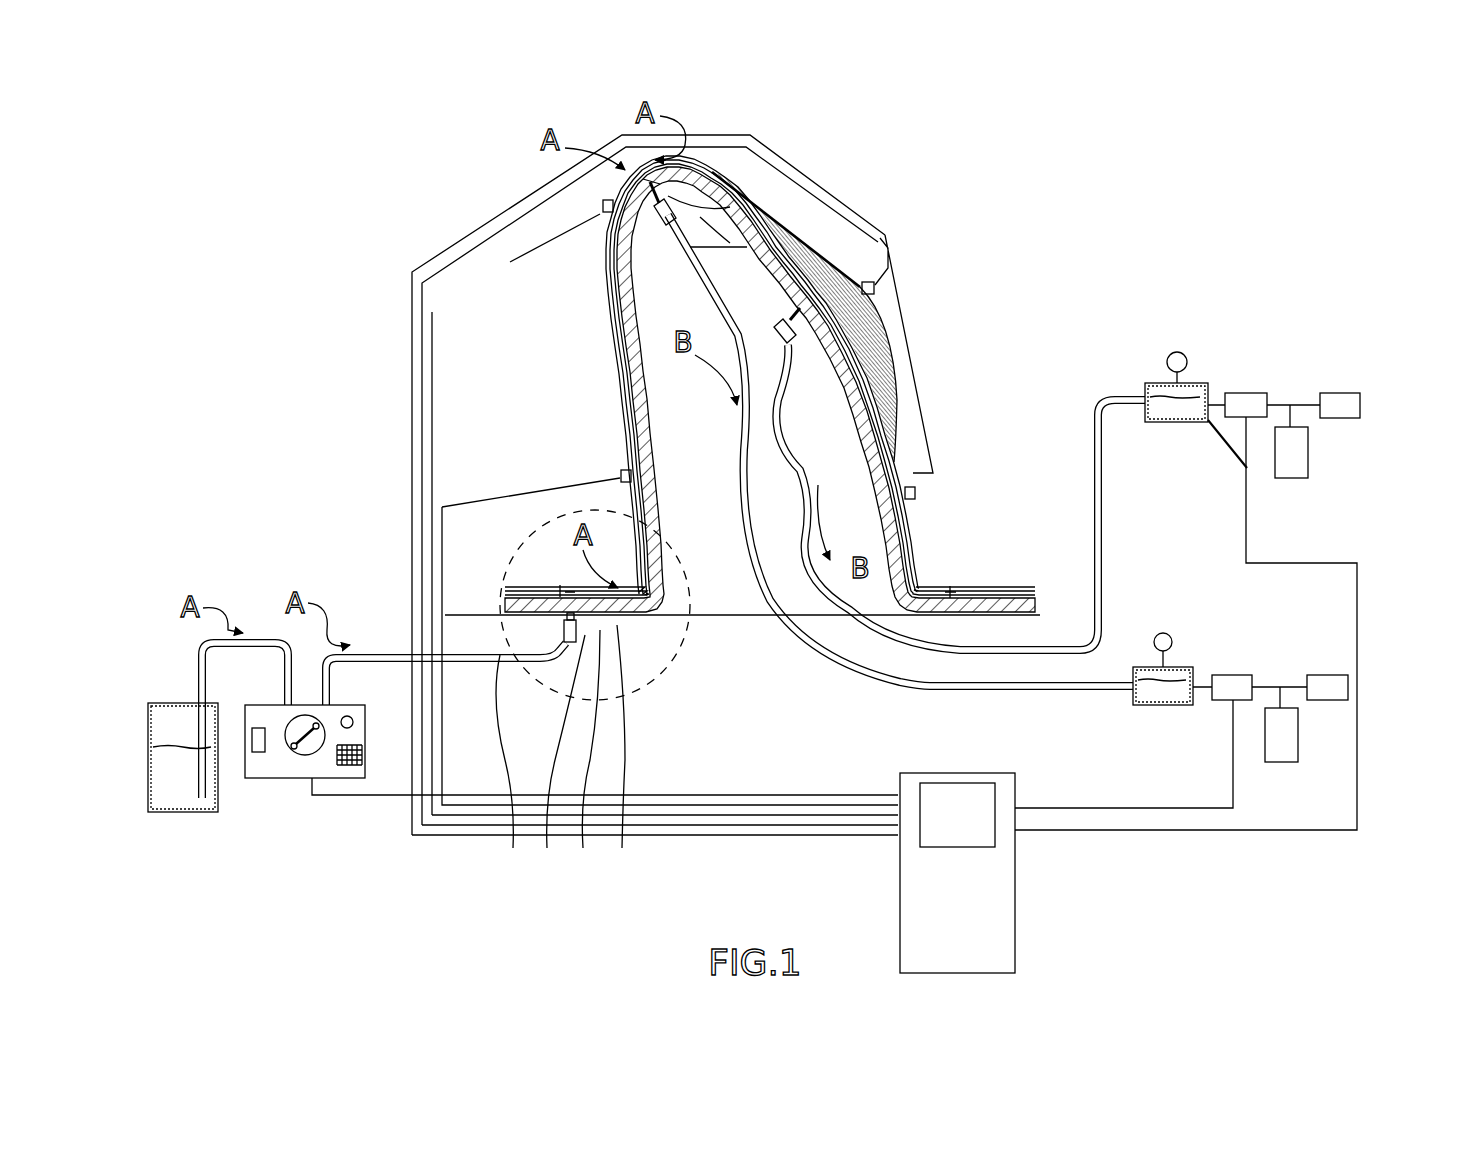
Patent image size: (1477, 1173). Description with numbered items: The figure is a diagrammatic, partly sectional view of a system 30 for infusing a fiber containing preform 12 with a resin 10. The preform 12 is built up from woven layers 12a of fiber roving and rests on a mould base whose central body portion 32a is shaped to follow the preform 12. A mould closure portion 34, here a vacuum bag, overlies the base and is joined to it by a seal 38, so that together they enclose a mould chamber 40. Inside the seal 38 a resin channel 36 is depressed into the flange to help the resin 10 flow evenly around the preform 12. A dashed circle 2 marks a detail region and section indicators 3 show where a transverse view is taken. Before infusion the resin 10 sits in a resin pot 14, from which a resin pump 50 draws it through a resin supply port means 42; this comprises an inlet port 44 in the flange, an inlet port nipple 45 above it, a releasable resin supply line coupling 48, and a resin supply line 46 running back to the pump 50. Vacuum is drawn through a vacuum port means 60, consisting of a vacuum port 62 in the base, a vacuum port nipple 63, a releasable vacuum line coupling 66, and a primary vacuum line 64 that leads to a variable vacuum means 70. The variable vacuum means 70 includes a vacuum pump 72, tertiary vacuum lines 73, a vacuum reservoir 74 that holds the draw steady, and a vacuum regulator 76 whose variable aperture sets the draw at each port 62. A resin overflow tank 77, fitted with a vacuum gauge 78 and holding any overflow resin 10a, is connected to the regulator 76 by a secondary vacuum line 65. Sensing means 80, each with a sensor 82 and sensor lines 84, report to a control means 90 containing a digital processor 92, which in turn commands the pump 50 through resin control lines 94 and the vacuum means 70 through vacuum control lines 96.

The detail region 2 is at (658, 680).
The section line 3 is at (468, 620).
The resin 10 is at (160, 760).
The collected liquid 10a is at (1160, 700).
The fiber containing preform 12 is at (884, 317).
The woven layers 12a is at (866, 330).
The resin pot 14 is at (169, 759).
The system 30 is at (328, 228).
The central body portion 32a is at (712, 172).
The mould closure portion 34 is at (606, 262).
The resin channel 36 is at (562, 588).
The seal 38 is at (520, 588).
The mould chamber 40 is at (815, 290).
The resin supply port means 42 is at (565, 771).
The inlet port 44 is at (620, 753).
The inlet port nipple 45 is at (582, 747).
The resin supply line 46 is at (508, 768).
The releasable resin supply line coupling 48 is at (556, 758).
The resin pump 50 is at (277, 757).
The vacuum port means 60 is at (772, 352).
The vacuum port 62 is at (722, 180).
The vacuum port nipple 63 is at (735, 190).
The primary vacuum line 64 is at (843, 665).
The secondary vacuum line 65 is at (1207, 700).
The releasable vacuum line coupling 66 is at (750, 205).
The variable vacuum means 70 is at (1246, 551).
The vacuum pump 72 is at (1335, 410).
The tertiary vacuum lines 73 is at (1300, 403).
The vacuum reservoir 74 is at (1300, 452).
The vacuum regulator 76 is at (1250, 405).
The resin overflow tank 77 is at (1247, 468).
The vacuum gauge 78 is at (1187, 362).
The sensing means 80 is at (752, 335).
The sensors 82 is at (600, 207).
The sensor lines 84 is at (535, 255).
The control means 90 is at (996, 877).
The digital processor 92 is at (965, 832).
The resin control lines 94 is at (338, 797).
The vacuum control lines 96 is at (1115, 812).